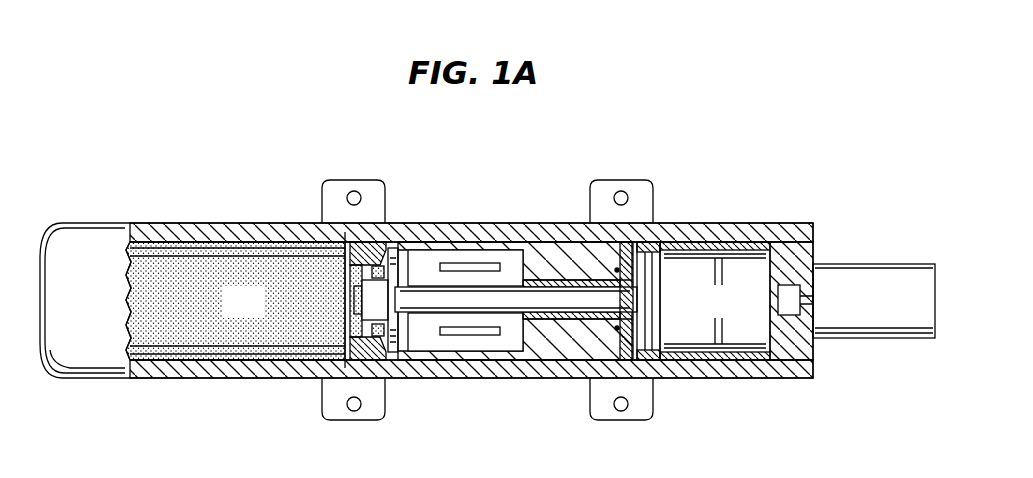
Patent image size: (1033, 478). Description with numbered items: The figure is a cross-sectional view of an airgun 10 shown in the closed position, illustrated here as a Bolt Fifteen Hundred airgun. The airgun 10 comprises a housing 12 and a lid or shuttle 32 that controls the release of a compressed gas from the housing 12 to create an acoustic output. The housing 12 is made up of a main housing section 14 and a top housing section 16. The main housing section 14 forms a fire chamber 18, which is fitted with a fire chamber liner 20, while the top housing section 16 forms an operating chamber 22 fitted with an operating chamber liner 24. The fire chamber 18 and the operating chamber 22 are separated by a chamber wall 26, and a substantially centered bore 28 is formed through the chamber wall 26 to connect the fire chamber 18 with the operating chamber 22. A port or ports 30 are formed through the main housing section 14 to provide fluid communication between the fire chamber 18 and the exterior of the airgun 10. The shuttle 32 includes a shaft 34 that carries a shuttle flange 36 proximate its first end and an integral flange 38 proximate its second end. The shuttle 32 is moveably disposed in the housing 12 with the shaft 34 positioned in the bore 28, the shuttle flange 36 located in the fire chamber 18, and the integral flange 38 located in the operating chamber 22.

The airgun 10 is at (706, 190).
The housing 12 is at (92, 222).
The main housing section 14 is at (196, 378).
The top housing section 16 is at (782, 223).
The fire chamber 18 is at (262, 314).
The fire chamber liner 20 is at (161, 246).
The operating chamber 22 is at (735, 314).
The operating chamber liner 24 is at (740, 362).
The chamber wall 26 is at (552, 223).
The bore 28 is at (617, 328).
The port 30 is at (480, 248).
The shuttle 32 is at (416, 322).
The shaft 34 is at (503, 300).
The shuttle flange 36 is at (398, 252).
The integral flange 38 is at (646, 333).